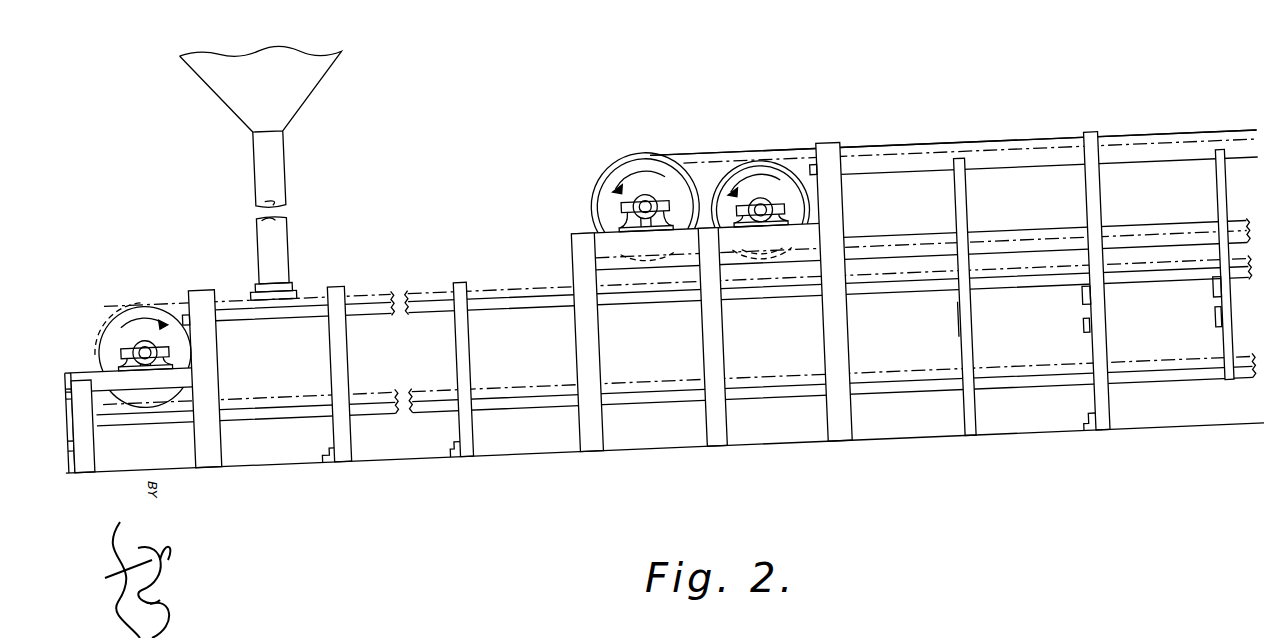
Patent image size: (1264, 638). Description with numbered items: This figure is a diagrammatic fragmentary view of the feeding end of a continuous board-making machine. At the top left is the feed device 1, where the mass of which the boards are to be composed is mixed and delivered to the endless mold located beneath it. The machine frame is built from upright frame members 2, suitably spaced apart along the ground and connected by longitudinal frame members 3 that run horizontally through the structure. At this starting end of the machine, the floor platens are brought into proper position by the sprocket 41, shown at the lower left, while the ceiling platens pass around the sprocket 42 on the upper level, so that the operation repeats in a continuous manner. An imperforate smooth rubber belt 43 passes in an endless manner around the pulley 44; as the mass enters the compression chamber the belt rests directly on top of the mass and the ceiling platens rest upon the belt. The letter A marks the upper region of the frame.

The feed device 1 is at (291, 165).
The upright frame members 2 is at (344, 449).
The longitudinal frame members 3 is at (432, 302).
The sprocket 41 is at (138, 288).
The sprocket 42 is at (805, 207).
The belt 43 is at (719, 156).
The pulley 44 is at (608, 193).
The upper track section A is at (952, 122).